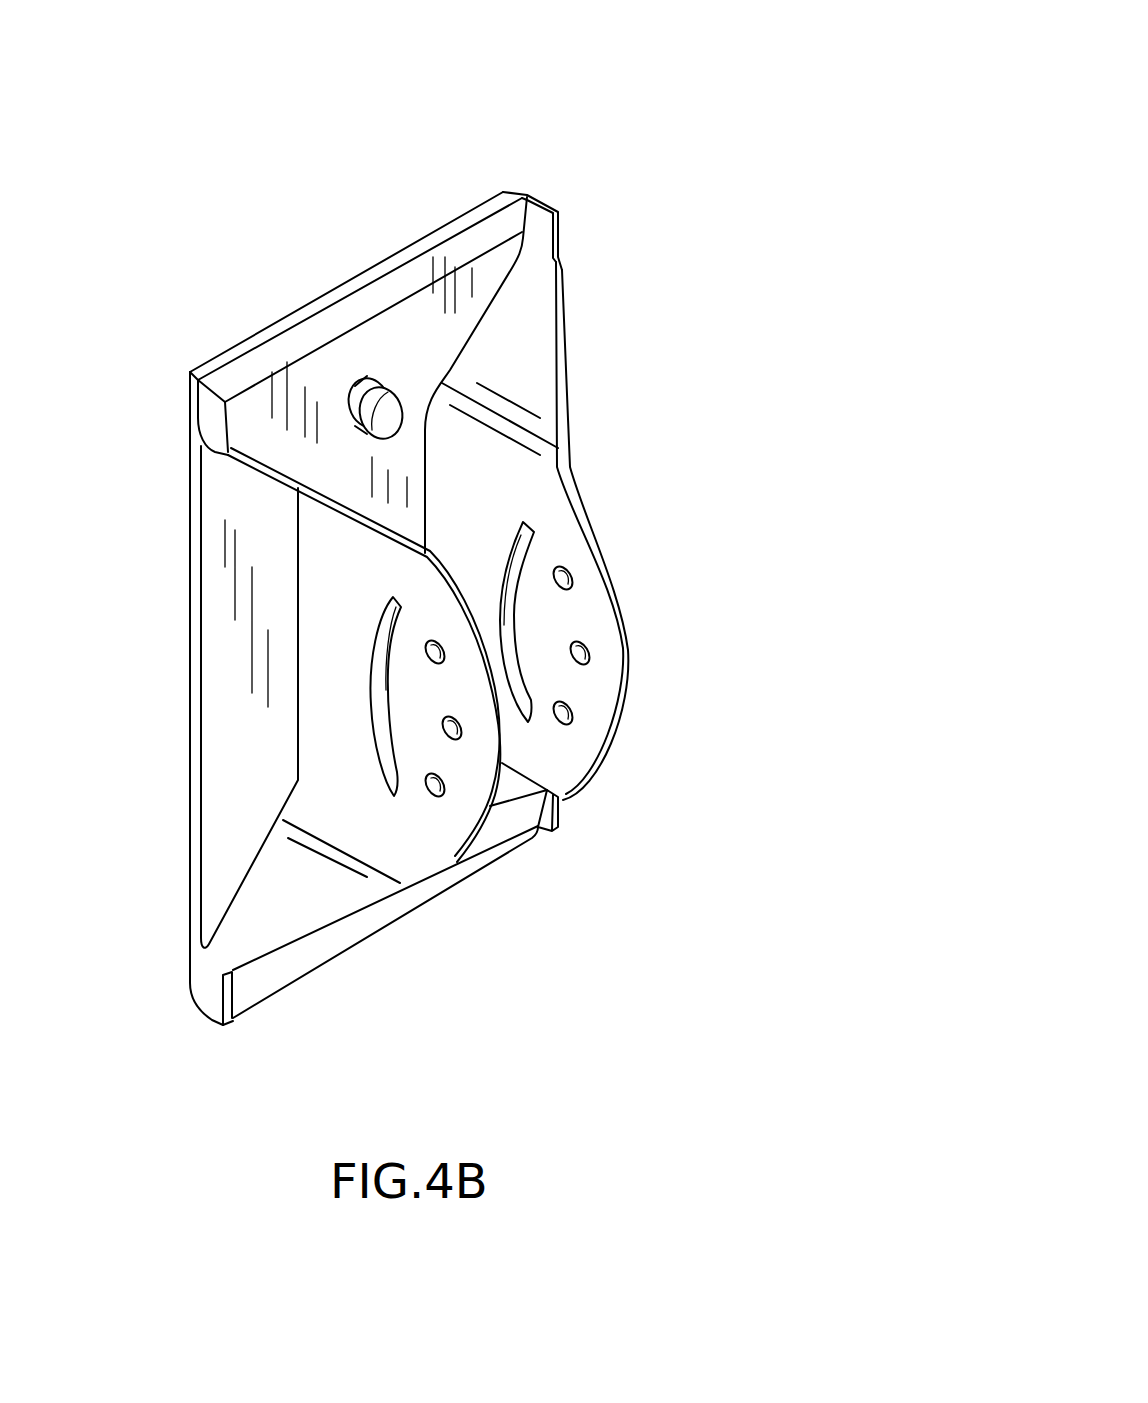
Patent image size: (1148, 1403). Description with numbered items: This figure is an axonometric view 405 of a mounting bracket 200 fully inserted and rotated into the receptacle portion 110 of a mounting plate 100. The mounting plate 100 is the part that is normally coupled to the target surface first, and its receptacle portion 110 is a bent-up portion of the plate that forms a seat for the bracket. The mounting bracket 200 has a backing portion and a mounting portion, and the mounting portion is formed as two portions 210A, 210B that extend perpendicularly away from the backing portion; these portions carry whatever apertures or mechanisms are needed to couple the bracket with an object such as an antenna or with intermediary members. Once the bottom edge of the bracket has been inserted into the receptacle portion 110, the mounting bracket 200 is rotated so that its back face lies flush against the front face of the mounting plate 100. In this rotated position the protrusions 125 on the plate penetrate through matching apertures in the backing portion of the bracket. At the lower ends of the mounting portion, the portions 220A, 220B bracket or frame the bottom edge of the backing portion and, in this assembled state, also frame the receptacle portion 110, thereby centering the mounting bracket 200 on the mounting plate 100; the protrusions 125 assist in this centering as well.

The axonometric view 405 is at (673, 107).
The mounting plate 100 is at (262, 327).
The receptacle portion 110 is at (450, 891).
The protrusions 125 is at (388, 390).
The mounting bracket 200 is at (567, 340).
The first portion of mounting portion 210A is at (437, 558).
The second portion of mounting portion 210B is at (615, 566).
The first bracketing portion 220A is at (234, 1018).
The second bracketing portion 220B is at (563, 816).